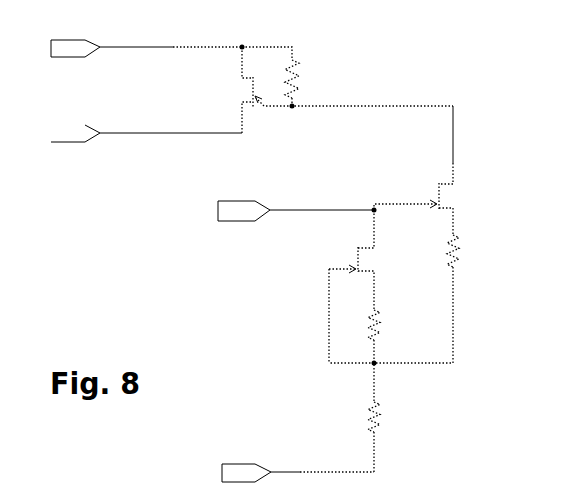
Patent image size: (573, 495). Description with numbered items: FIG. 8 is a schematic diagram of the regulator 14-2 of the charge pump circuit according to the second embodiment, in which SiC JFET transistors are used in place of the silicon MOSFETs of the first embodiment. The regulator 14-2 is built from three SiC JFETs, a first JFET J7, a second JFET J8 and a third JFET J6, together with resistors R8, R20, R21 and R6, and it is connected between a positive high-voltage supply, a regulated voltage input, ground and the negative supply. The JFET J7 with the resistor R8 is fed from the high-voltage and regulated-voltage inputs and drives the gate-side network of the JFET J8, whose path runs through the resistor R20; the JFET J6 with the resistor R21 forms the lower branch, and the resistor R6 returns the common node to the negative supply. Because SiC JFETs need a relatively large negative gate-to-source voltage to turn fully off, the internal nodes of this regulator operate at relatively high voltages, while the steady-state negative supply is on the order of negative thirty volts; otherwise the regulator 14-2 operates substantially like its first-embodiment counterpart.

The SiC JFET current source circuit 14-2 is at (186, 270).
The SiC JFET J7 is at (241, 90).
The resistor R8 500K R8 is at (347, 76).
The SiC JFET J8 is at (445, 170).
The resistor R20 10K R20 is at (406, 299).
The SiC JFET J6 is at (376, 286).
The resistor R21 4.99K R21 is at (394, 356).
The resistor R6 31.6K R6 is at (358, 437).